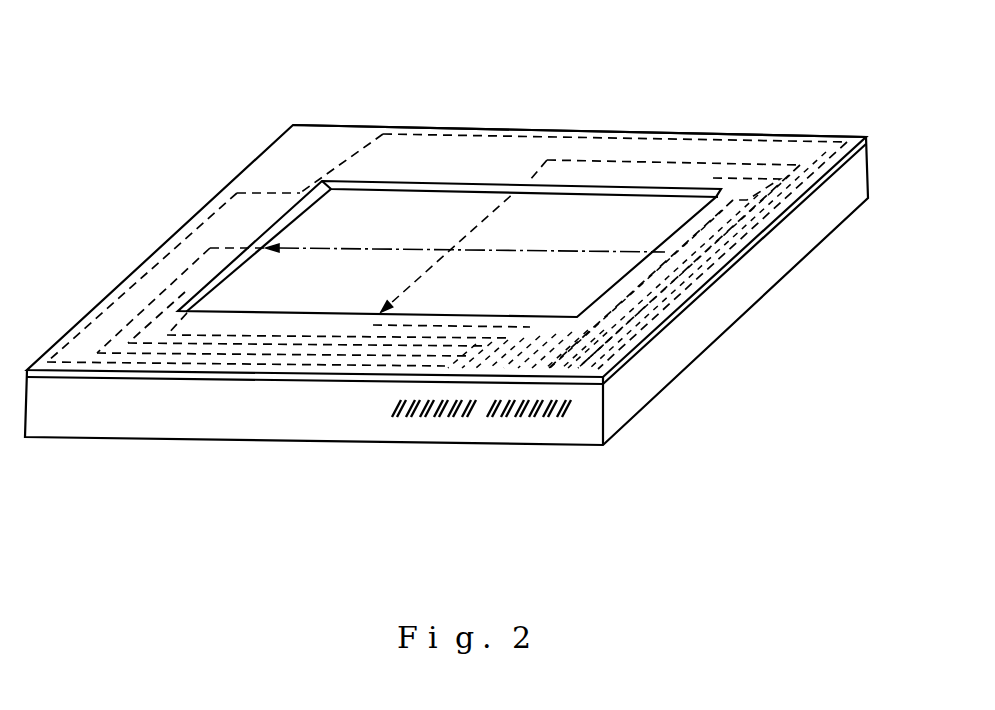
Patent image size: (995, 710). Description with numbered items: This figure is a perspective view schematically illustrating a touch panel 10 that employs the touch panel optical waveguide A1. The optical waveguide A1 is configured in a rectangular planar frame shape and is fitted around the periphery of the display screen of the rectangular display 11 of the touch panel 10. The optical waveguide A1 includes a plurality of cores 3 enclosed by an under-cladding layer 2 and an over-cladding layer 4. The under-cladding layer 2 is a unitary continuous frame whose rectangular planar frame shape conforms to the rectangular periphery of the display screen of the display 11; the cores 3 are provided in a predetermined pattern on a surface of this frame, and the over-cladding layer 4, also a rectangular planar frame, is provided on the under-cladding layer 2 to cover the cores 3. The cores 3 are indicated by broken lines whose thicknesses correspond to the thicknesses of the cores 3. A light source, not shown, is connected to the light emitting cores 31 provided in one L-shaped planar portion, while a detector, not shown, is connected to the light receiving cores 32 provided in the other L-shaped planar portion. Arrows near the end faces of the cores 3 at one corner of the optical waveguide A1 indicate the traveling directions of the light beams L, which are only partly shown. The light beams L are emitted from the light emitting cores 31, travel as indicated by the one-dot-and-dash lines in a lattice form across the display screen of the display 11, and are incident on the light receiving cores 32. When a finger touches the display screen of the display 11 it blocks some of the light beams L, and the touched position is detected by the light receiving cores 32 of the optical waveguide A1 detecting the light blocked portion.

The touch panel 10 is at (375, 95).
The under-cladding layer 2 is at (655, 338).
The over-cladding layer 4 is at (630, 147).
The touch panel optical waveguide A1 is at (282, 168).
The display 11 is at (553, 223).
The light beams L is at (390, 248).
The cores 3 is at (457, 336).
The light emitting cores 31 is at (658, 255).
The light receiving cores 32 is at (288, 431).